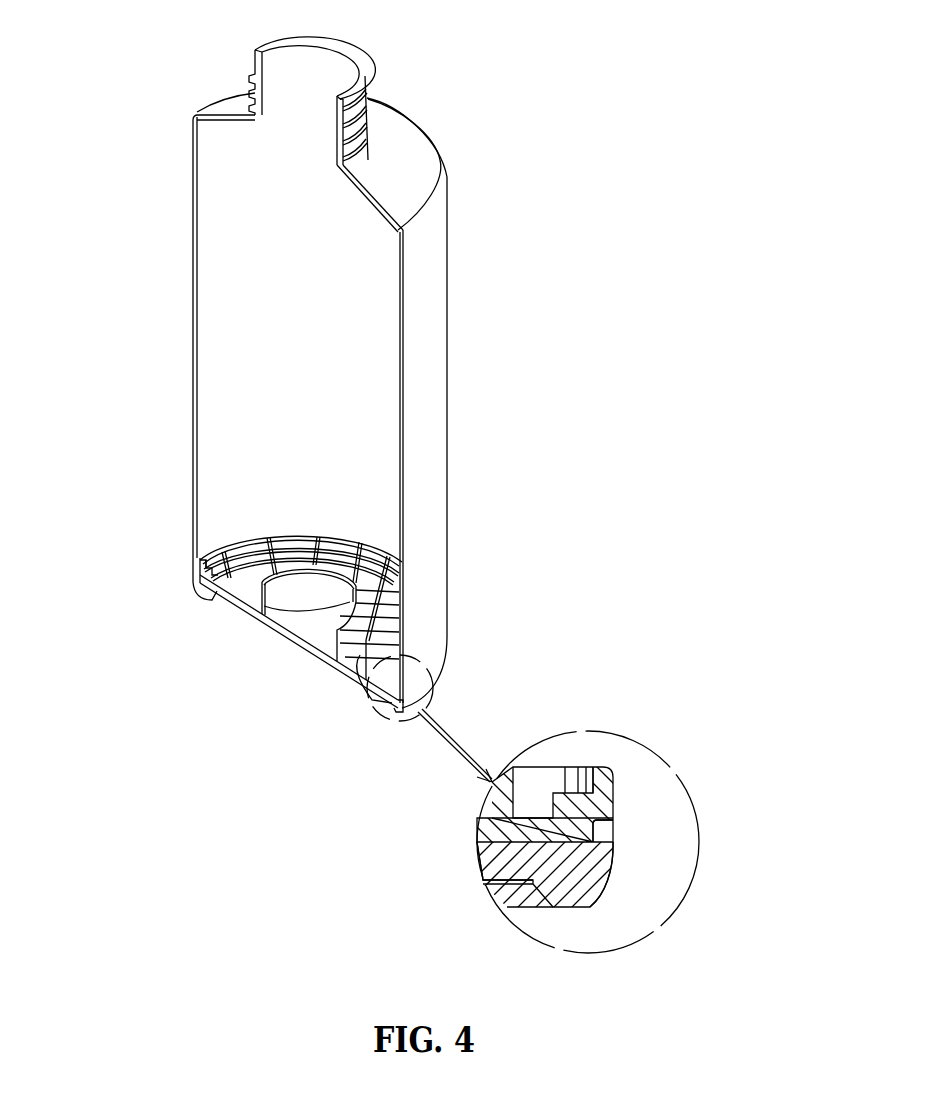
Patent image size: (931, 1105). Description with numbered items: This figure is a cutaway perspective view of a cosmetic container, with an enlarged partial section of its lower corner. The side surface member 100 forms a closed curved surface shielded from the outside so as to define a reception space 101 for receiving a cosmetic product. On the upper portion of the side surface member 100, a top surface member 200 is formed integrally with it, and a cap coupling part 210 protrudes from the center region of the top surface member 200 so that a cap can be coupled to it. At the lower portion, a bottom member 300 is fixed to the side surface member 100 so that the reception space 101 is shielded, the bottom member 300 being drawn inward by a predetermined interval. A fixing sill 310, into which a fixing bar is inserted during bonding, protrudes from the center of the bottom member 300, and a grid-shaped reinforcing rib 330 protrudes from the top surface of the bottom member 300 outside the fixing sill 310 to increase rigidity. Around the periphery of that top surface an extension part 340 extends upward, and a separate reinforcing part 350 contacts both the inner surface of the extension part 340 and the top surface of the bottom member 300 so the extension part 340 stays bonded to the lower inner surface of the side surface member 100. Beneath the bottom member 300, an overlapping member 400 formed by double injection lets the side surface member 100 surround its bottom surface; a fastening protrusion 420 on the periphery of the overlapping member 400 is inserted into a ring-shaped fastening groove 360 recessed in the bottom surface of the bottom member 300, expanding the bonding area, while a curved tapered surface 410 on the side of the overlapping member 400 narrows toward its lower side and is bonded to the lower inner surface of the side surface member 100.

The side surface member 100 is at (432, 380).
The reception space 101 is at (257, 326).
The top surface member 200 is at (405, 150).
The cap coupling part 210 is at (347, 53).
The bottom member 300 is at (327, 648).
The fixing sill 310 is at (308, 590).
The reinforcing rib 330 is at (275, 540).
The extension part 340 is at (200, 562).
The reinforcing part 350 is at (200, 573).
The fastening groove 360 is at (612, 852).
The overlapping member 400 is at (366, 690).
The tapered surface 410 is at (607, 884).
The fastening protrusion 420 is at (610, 830).